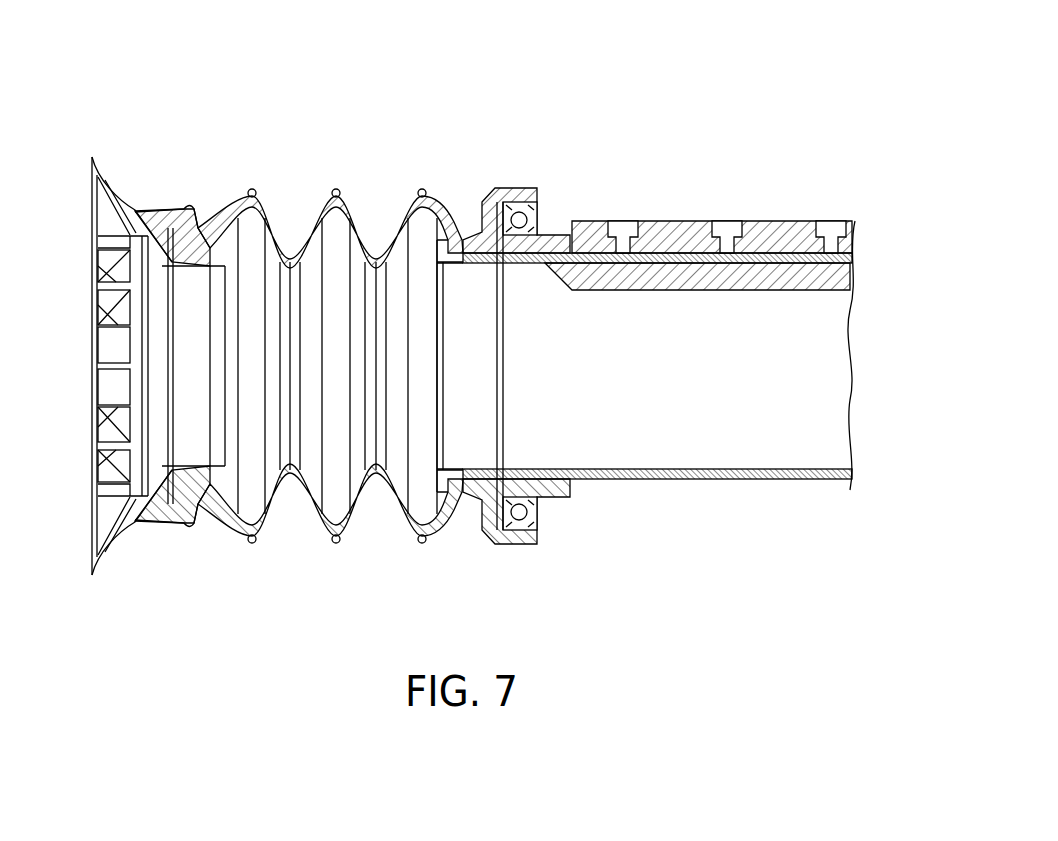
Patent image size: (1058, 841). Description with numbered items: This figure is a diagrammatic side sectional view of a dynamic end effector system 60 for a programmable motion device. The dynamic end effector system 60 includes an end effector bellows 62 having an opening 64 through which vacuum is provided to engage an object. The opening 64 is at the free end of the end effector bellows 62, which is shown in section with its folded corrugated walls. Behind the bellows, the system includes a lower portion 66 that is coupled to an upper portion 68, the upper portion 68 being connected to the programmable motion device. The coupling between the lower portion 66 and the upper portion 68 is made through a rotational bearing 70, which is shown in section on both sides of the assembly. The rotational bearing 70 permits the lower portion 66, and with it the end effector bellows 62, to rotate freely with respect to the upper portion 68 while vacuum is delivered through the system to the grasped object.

The dynamic end effector system 60 is at (629, 84).
The end effector bellows 62 is at (262, 200).
The opening 64 is at (90, 231).
The lower portion 66 is at (497, 188).
The upper portion 68 is at (683, 220).
The rotational bearing 70 is at (524, 208).